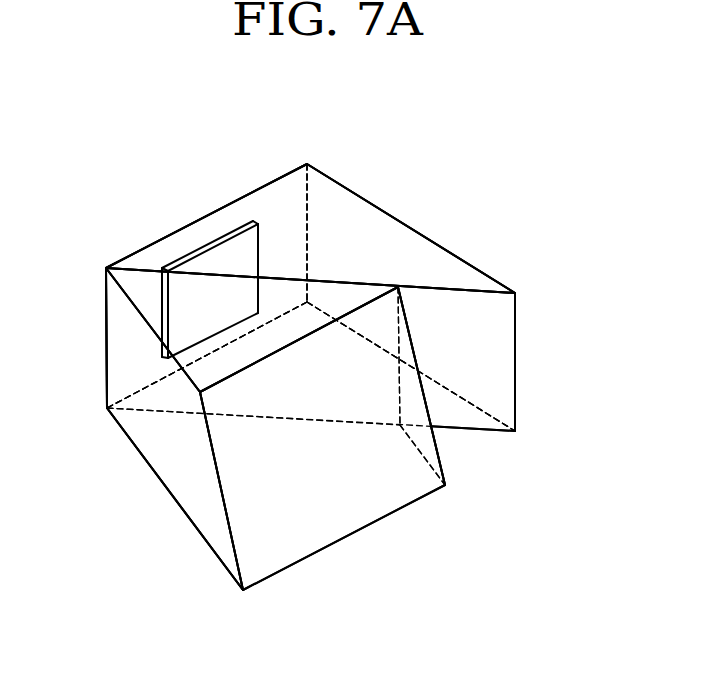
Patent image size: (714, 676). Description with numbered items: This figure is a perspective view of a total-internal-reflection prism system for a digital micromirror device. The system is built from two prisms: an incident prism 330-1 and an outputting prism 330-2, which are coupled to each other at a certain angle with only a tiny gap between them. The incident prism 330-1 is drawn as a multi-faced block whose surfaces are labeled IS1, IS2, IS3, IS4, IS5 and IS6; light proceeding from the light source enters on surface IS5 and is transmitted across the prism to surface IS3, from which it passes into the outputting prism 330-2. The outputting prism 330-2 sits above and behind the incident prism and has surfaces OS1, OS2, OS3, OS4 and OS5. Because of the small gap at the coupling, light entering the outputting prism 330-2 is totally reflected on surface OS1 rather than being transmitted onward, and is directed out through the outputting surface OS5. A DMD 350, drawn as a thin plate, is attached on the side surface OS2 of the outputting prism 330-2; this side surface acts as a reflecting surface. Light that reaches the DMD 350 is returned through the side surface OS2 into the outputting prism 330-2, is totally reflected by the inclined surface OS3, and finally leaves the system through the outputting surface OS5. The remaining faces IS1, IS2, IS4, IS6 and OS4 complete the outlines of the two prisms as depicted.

The incident prism 330-1 is at (403, 492).
The outputting prism 330-2 is at (497, 280).
The DMD 350 is at (227, 247).
The surface of incident prism IS1 is at (203, 517).
The surface of incident prism IS2 is at (112, 382).
The surface of incident prism IS3 is at (112, 348).
The surface of incident prism IS4 is at (127, 285).
The surface of incident prism IS5 is at (330, 543).
The surface of incident prism IS6 is at (437, 450).
The surface of outputting prism OS1 is at (470, 422).
The side surface of outputting prism OS2 is at (288, 198).
The inclined surface of outputting prism OS3 is at (507, 327).
The surface of outputting prism OS4 is at (380, 220).
The outputting surface OS5 is at (437, 255).